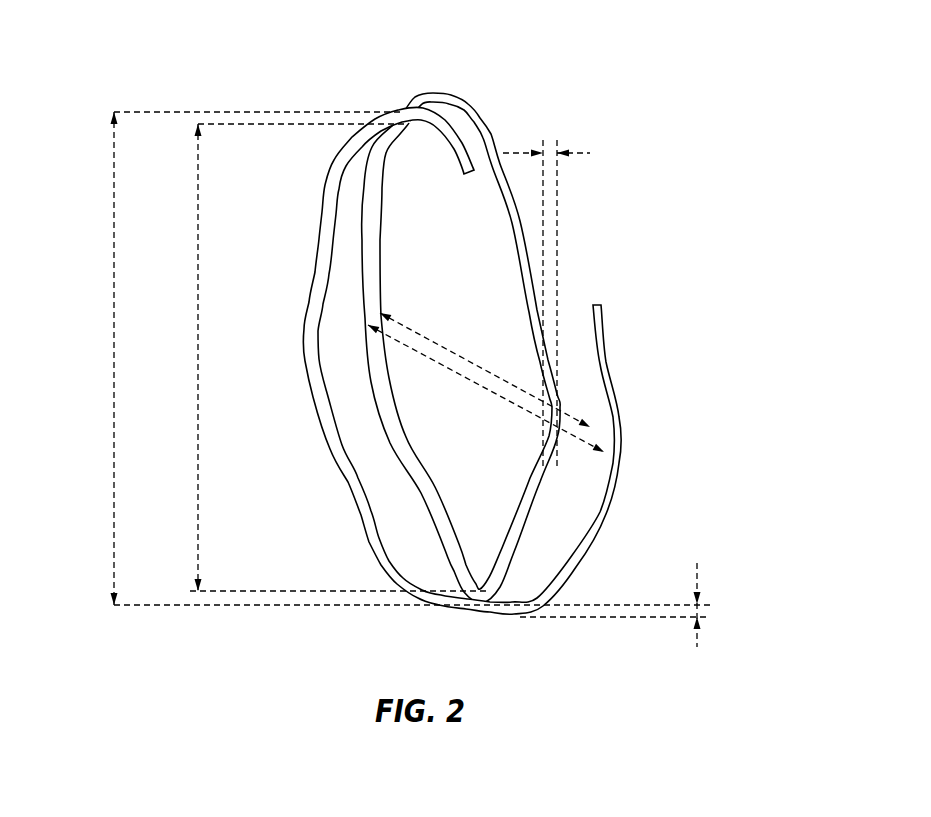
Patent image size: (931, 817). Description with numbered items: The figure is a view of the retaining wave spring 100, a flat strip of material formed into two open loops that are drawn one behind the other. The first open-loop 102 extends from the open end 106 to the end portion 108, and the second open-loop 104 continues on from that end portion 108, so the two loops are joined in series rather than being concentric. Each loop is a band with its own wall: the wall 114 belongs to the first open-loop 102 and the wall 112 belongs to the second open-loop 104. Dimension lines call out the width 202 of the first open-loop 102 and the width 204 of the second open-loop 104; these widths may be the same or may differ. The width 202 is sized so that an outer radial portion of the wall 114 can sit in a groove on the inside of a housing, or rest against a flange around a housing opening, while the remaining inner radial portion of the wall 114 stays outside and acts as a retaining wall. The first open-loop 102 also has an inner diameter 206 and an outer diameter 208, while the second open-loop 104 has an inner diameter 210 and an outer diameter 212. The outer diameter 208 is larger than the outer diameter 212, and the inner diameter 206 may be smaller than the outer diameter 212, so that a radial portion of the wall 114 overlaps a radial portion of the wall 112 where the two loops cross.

The retaining wave spring 100 is at (212, 62).
The first open-loop 102 is at (450, 547).
The second open-loop 104 is at (561, 395).
The open end 106 is at (590, 300).
The end portion 108 is at (513, 240).
The wall 112 is at (527, 493).
The wall 114 is at (513, 614).
The width 202 is at (700, 577).
The width 204 is at (517, 153).
The inner diameter 206 is at (440, 340).
The outer diameter 208 is at (467, 377).
The inner diameter 210 is at (198, 357).
The outer diameter 212 is at (113, 357).